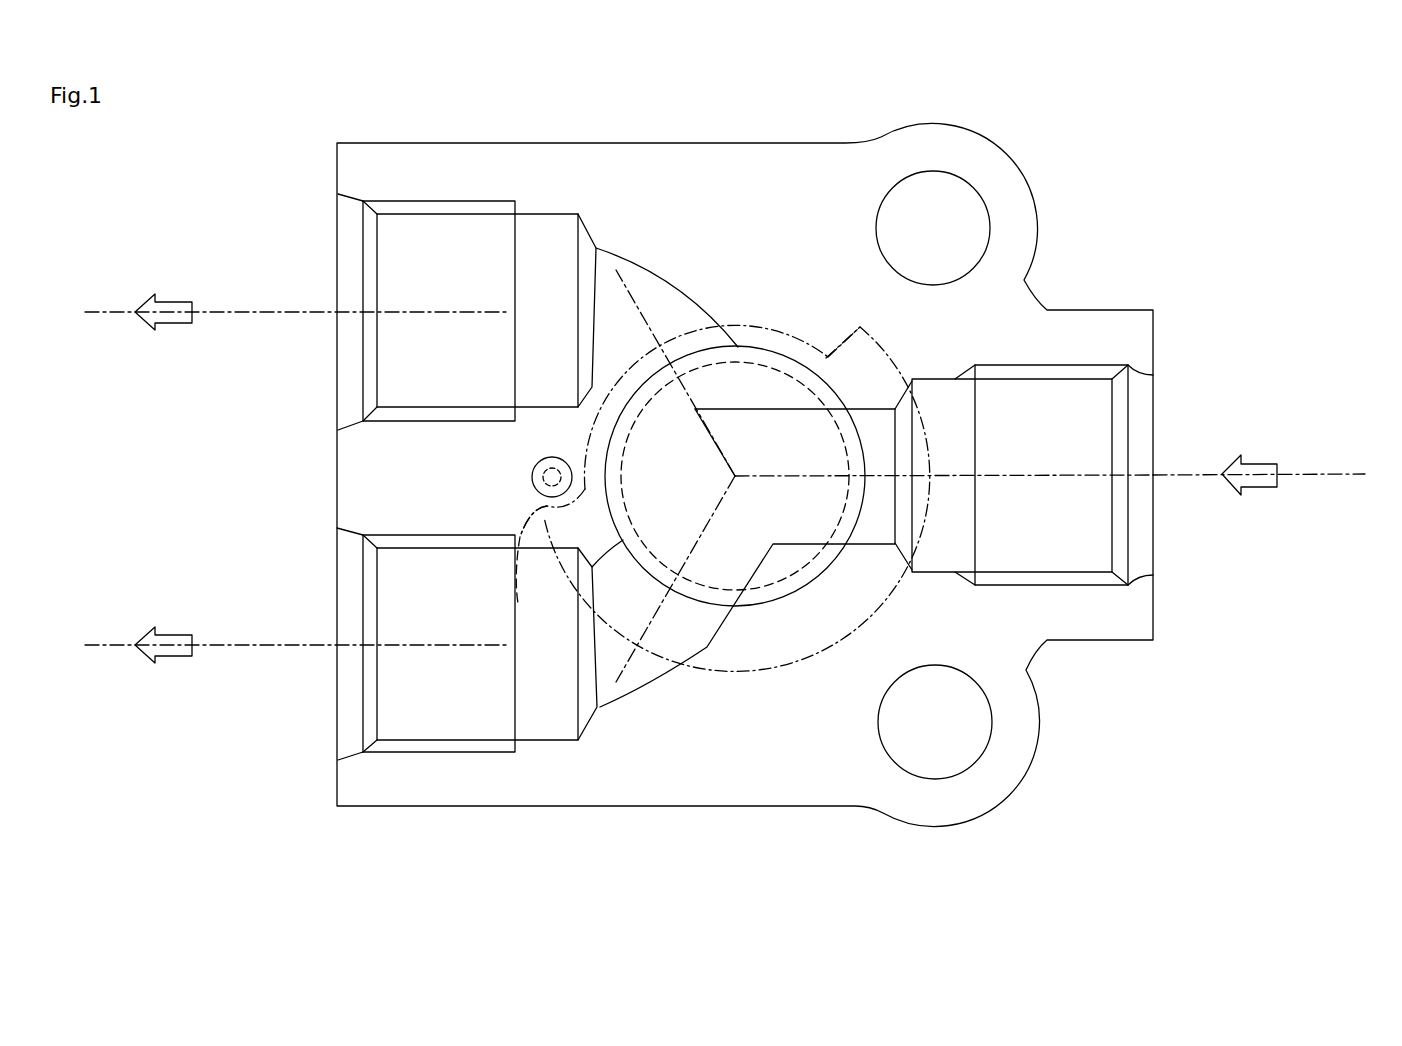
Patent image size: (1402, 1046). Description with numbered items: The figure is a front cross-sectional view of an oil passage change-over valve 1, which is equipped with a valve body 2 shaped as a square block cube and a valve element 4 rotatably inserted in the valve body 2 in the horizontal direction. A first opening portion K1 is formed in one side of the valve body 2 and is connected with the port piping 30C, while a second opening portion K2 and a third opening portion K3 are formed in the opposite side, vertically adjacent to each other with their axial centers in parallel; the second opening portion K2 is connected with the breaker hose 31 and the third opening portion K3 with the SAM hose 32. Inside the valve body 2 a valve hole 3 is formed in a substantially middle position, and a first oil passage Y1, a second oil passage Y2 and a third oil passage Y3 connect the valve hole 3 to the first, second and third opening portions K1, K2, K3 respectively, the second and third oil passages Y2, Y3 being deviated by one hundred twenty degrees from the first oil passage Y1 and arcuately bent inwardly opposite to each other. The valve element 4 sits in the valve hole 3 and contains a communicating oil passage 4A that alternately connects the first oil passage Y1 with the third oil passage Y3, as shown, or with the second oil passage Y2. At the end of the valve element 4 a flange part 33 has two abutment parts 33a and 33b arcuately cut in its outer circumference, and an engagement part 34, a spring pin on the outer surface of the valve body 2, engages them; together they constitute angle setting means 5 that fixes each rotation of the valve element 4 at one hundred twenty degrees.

The oil passage change-over valve 1 is at (1107, 191).
The valve body 2 is at (718, 158).
The valve hole 3 is at (797, 364).
The valve element 4 is at (745, 386).
The communicating oil passage 4A is at (703, 413).
The angle setting means 5 is at (504, 484).
The breaker hose 31 is at (236, 314).
The SAM hose 32 is at (240, 644).
The port piping 30C is at (1318, 478).
The flange part 33 is at (518, 603).
The abutment part 33a is at (522, 563).
The abutment part 33b is at (838, 350).
The engagement part 34 is at (548, 478).
The first opening portion K1 is at (1153, 368).
The second opening portion K2 is at (338, 195).
The third opening portion K3 is at (343, 757).
The first oil passage Y1 is at (878, 546).
The second oil passage Y2 is at (640, 272).
The third oil passage Y3 is at (712, 630).